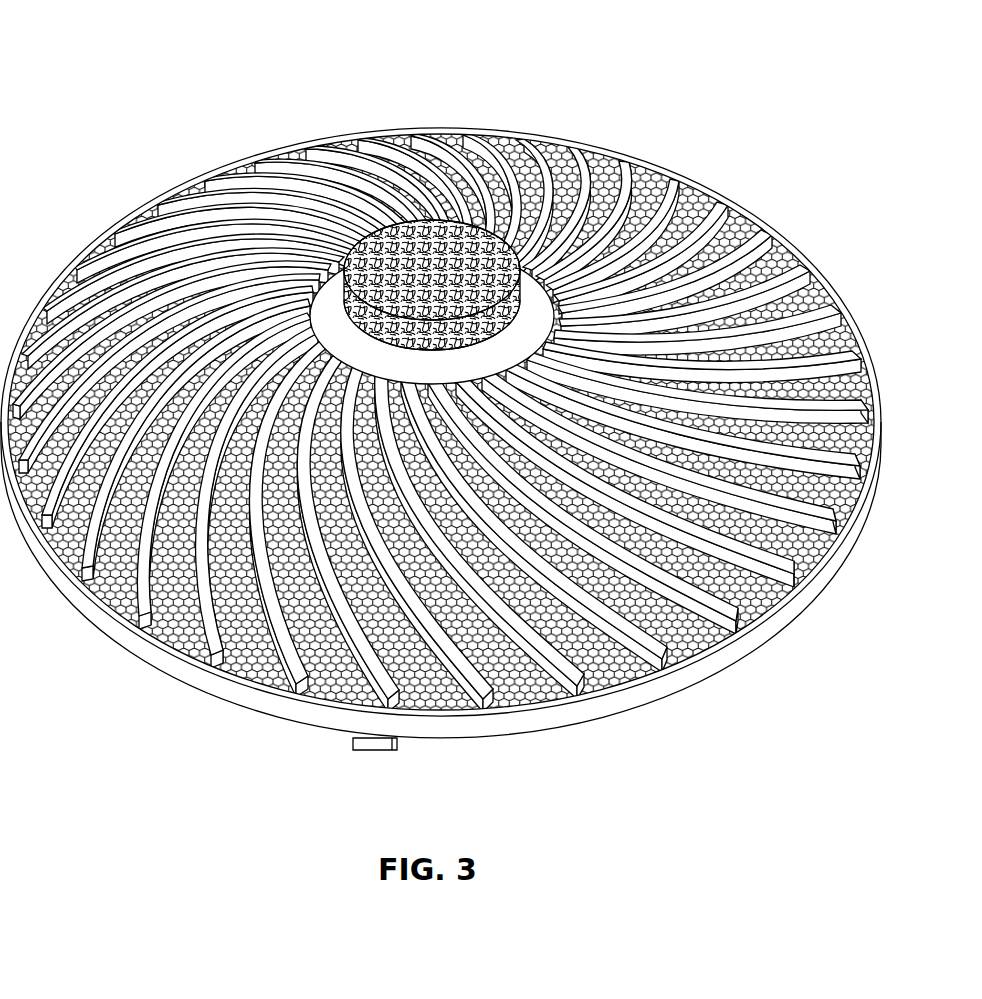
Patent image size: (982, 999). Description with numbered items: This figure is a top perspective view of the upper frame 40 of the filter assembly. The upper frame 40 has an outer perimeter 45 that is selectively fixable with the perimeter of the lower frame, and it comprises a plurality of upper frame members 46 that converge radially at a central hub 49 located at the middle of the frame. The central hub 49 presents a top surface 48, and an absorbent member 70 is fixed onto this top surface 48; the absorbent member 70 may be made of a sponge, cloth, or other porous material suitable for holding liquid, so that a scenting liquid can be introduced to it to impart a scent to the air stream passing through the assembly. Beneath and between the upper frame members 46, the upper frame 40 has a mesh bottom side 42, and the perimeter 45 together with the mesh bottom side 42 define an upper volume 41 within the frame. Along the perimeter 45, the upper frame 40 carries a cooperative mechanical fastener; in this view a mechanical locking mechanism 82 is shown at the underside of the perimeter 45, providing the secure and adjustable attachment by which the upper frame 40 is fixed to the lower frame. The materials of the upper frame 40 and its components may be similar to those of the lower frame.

The upper frame 40 is at (441, 421).
The upper volume 41 is at (608, 637).
The mesh bottom side 42 is at (723, 593).
The perimeter 45 is at (262, 715).
The upper frame members 46 is at (542, 658).
The top surface 48 is at (509, 203).
The central hub 49 is at (467, 203).
The absorbent member 70 is at (480, 238).
The mechanical locking mechanism 82 is at (370, 742).